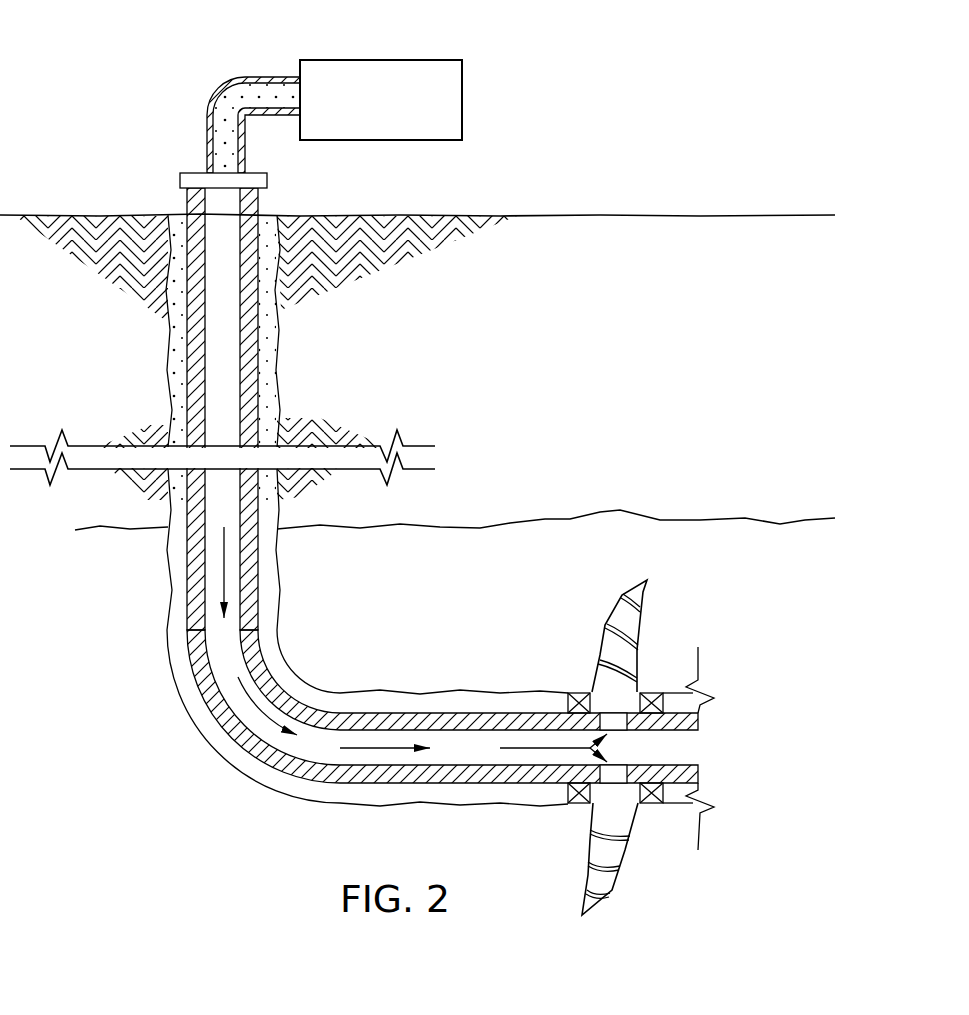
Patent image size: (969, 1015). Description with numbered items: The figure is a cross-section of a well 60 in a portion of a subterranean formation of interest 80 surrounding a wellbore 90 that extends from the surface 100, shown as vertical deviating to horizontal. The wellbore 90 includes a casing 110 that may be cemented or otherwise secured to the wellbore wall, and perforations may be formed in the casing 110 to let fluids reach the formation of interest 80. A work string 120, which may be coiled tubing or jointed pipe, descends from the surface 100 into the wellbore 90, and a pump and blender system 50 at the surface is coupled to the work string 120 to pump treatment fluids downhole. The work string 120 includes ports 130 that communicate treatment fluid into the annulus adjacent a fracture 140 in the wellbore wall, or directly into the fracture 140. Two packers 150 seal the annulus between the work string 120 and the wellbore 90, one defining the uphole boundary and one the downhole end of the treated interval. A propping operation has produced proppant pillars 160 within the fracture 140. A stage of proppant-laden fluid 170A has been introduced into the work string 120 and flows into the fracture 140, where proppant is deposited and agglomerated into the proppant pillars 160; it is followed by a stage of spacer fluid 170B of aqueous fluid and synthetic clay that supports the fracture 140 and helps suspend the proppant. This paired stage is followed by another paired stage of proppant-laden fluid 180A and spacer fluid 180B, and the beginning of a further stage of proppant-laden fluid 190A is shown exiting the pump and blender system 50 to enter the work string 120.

The pump and blender system 50 is at (366, 113).
The well 60 is at (200, 792).
The subterranean formation of interest 80 is at (569, 519).
The wellbore 90 is at (172, 364).
The surface 100 is at (566, 215).
The casing 110 is at (248, 357).
The work string 120 is at (195, 636).
The ports 130 is at (615, 732).
The fracture 140 is at (641, 632).
The packers 150 is at (668, 804).
The proppant pillars 160 is at (614, 892).
The stage of proppant-laden fluid 170A is at (557, 745).
The stage of spacer fluid 170B is at (383, 745).
The stage of proppant-laden fluid 180A is at (230, 729).
The stage of spacer fluid 180B is at (222, 570).
The proppant-laden fluid 190A is at (222, 84).